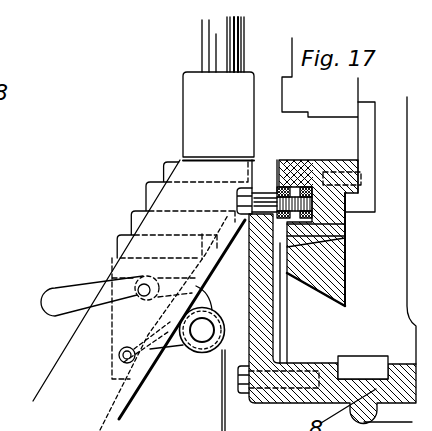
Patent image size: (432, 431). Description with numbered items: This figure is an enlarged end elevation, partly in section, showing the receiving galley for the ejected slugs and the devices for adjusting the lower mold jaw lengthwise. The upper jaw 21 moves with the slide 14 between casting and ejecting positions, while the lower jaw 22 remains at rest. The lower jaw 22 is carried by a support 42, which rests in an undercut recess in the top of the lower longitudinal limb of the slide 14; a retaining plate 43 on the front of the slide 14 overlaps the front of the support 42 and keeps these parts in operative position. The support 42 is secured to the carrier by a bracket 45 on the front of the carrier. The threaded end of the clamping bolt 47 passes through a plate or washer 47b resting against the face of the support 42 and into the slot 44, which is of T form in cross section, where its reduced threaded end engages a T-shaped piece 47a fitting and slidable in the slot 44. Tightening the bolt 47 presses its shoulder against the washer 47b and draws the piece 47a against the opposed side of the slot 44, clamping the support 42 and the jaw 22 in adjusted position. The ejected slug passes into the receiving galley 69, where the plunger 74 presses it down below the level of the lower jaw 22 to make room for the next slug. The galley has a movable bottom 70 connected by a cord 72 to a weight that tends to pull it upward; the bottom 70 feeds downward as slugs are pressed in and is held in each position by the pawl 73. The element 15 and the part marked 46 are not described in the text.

The slide 14 is at (393, 326).
The key block 15 is at (362, 364).
The upper jaw 21 is at (320, 115).
The lower jaw 22 is at (304, 173).
The support 42 is at (329, 273).
The retaining plate 43 is at (288, 316).
The slot 44 is at (319, 229).
The bracket 45 is at (267, 401).
The bolt 46 is at (266, 200).
The clamping bolt 47 is at (288, 167).
The T-shaped piece 47a is at (346, 197).
The plate or washer 47b is at (324, 248).
The receiving galley 69 is at (77, 356).
The movable bottom 70 is at (122, 329).
The cord 72 is at (220, 373).
The pawl 73 is at (100, 305).
The plunger 74 is at (186, 116).